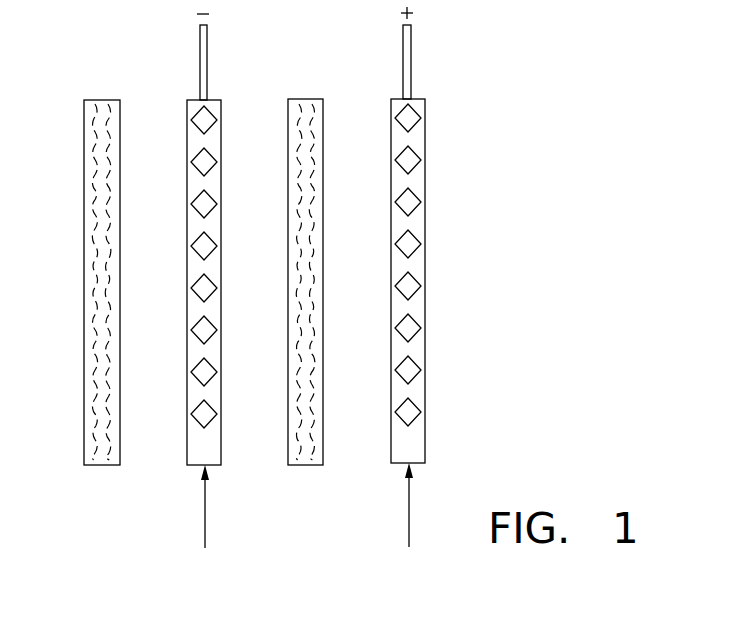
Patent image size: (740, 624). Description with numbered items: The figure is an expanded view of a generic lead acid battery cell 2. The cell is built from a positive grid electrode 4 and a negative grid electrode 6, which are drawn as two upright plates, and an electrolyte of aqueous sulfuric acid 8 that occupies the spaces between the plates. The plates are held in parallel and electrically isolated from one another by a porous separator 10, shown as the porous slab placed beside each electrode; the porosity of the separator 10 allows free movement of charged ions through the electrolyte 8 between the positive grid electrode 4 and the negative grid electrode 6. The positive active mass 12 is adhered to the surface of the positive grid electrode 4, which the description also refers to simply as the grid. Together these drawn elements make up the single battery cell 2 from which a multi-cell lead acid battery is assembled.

The lead acid battery cell 2 is at (466, 84).
The positive grid electrode 4 is at (432, 214).
The negative grid electrode 6 is at (187, 118).
The electrolyte of aqueous sulfuric acid 8 is at (266, 243).
The porous separator 10 is at (84, 438).
The positive active mass 12 is at (425, 437).